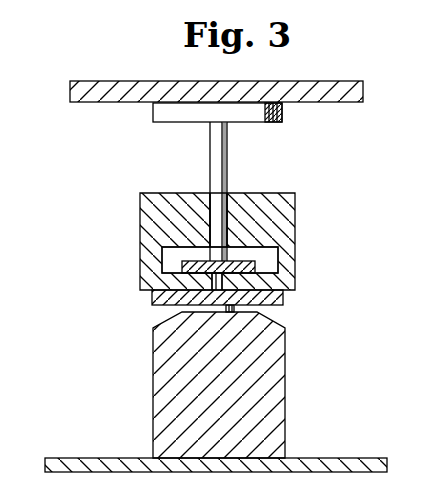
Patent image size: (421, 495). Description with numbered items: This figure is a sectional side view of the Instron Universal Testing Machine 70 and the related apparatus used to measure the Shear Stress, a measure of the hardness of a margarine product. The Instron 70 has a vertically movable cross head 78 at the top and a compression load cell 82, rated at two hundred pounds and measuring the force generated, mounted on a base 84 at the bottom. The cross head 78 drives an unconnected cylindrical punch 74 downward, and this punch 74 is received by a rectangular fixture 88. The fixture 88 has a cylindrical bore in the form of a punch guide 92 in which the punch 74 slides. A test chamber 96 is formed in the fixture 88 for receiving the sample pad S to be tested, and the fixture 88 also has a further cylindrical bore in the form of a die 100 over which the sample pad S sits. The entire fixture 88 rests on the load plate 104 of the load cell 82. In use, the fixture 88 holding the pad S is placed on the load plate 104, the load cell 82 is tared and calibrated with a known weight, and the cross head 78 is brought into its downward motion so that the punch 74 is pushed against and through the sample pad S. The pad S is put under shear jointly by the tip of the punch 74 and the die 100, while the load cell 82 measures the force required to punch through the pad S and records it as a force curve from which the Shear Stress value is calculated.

The Instron Universal Testing Machine 70 is at (216, 276).
The cylindrical punch 74 is at (222, 149).
The cross head 78 is at (282, 111).
The compression load cell 82 is at (277, 393).
The base 84 is at (323, 458).
The rectangular fixture 88 is at (277, 217).
The punch guide 92 is at (211, 200).
The test chamber 96 is at (170, 258).
The die 100 is at (216, 279).
The load plate 104 is at (280, 297).
The sample pad S is at (255, 268).